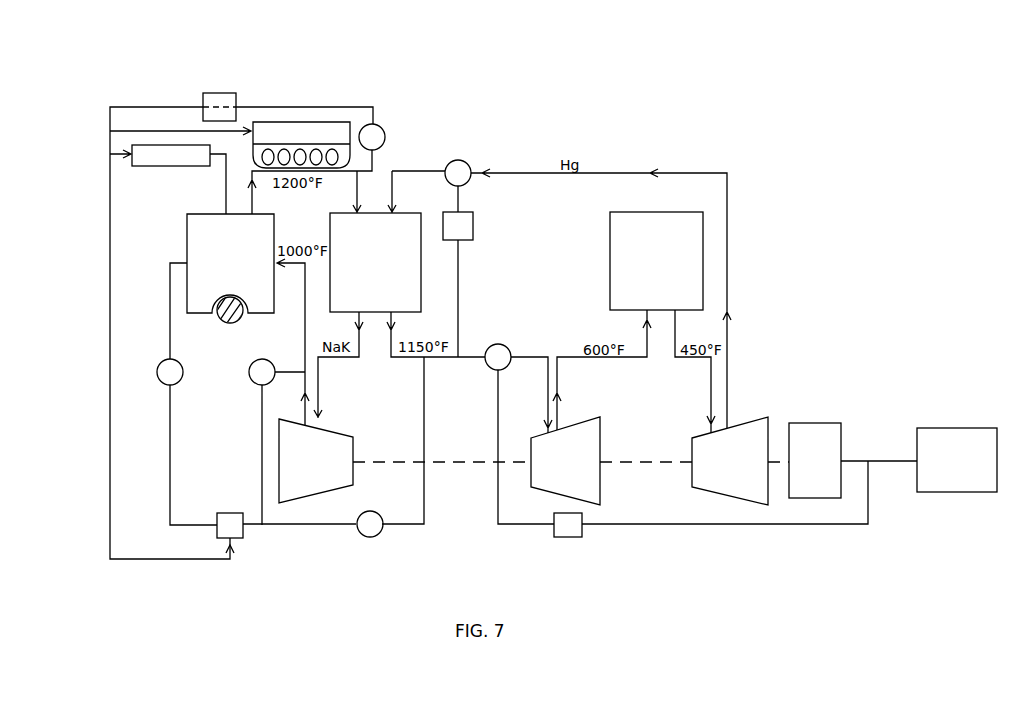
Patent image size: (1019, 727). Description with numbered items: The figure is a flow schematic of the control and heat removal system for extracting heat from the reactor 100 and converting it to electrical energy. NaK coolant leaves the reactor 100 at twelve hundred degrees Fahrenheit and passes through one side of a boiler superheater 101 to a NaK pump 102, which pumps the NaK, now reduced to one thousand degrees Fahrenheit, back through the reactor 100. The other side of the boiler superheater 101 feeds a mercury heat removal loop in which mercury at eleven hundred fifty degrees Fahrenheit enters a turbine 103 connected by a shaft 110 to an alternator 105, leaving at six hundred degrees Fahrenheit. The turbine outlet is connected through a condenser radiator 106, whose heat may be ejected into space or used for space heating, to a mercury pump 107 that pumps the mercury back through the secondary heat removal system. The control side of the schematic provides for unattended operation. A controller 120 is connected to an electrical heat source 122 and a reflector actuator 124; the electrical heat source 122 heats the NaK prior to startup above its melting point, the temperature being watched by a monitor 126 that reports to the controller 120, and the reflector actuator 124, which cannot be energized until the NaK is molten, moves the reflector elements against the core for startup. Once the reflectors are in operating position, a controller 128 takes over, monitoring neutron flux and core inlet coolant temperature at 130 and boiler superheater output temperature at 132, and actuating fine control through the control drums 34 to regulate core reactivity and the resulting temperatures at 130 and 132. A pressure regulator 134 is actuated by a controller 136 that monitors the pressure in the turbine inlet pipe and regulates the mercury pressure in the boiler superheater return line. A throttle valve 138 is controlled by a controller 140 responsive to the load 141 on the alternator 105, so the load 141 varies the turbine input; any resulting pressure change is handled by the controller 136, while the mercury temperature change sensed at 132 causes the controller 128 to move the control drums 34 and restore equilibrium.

The control drums 34 is at (223, 319).
The reactor 100 is at (230, 263).
The boiler superheater 101 is at (375, 262).
The NaK pump 102 is at (316, 461).
The turbine 103 is at (565, 461).
The alternator 105 is at (815, 460).
The condenser radiator 106 is at (656, 261).
The mercury pump 107 is at (730, 461).
The shaft 110 is at (478, 464).
The controller 120 is at (220, 100).
The electrical heat source 122 is at (301, 145).
The reflector actuator 124 is at (150, 157).
The monitor 126 is at (381, 132).
The controller 128 is at (237, 528).
The neutron flux and core inlet coolant temperature monitors 130 is at (163, 382).
The boiler superheater output temperature monitor 132 is at (375, 530).
The pressure regulator 134 is at (461, 163).
The controller 136 is at (465, 227).
The throttle valve 138 is at (495, 345).
The controller 140 is at (567, 528).
The load 141 is at (957, 460).